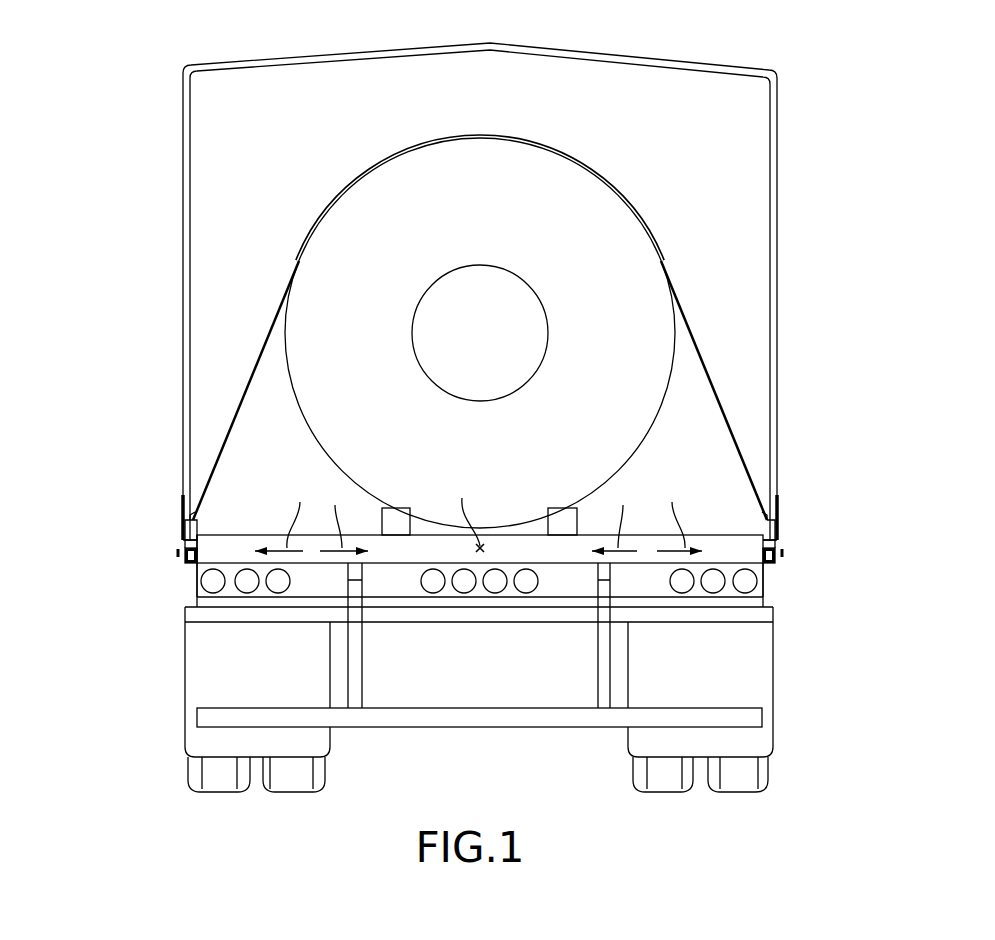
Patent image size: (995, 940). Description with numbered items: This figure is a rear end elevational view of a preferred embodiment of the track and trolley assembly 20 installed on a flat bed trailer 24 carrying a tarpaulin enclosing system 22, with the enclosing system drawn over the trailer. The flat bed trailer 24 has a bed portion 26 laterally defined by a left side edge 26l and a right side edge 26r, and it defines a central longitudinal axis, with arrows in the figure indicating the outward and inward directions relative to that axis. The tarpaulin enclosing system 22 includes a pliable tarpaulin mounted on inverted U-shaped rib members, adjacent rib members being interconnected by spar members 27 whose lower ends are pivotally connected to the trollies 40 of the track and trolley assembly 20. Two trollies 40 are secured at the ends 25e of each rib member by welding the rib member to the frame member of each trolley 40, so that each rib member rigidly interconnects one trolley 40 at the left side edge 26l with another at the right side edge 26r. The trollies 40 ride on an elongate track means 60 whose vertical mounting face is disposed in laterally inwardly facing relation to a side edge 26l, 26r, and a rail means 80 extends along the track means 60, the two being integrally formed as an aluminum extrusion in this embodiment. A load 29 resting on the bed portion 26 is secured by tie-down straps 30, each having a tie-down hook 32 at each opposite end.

The track and trolley assembly 20 is at (138, 553).
The tarpaulin enclosing system 22 is at (447, 291).
The flat bed trailer 24 is at (550, 553).
The ends of rib member 25e is at (188, 498).
The bed portion 26 is at (235, 547).
The left side edge 26l is at (193, 567).
The right side edge 26r is at (775, 567).
The spar members 27 is at (350, 58).
The load 29 is at (572, 182).
The tie-down straps 30 is at (262, 352).
The tie-down hook 32 is at (200, 520).
The trolley 40 is at (170, 527).
The elongate track means 60 is at (477, 584).
The rail means 80 is at (175, 567).